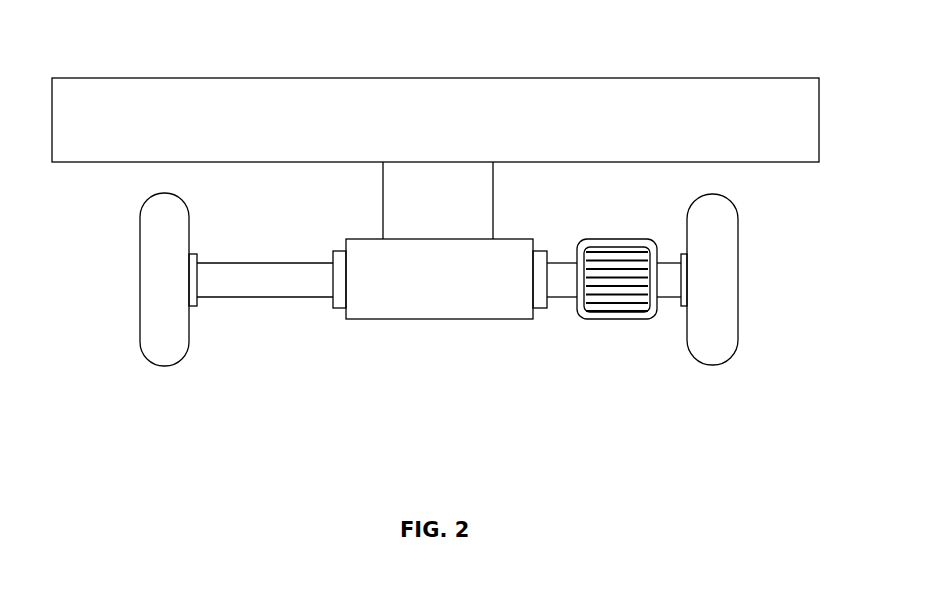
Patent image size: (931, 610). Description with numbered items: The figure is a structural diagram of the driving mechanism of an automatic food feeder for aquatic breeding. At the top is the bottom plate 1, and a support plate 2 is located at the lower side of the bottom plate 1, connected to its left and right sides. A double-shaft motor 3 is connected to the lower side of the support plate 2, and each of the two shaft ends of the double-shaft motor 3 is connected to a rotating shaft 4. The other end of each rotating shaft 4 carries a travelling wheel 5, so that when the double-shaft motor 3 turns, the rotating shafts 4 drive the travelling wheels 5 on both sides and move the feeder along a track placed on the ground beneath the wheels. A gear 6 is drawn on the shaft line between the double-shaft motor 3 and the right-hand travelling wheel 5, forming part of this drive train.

The bottom plate 1 is at (435, 81).
The support plate 2 is at (410, 119).
The double-shaft motor 3 is at (440, 323).
The rotating shaft 4 is at (265, 324).
The travelling wheel 5 is at (158, 306).
The gear 6 is at (603, 322).